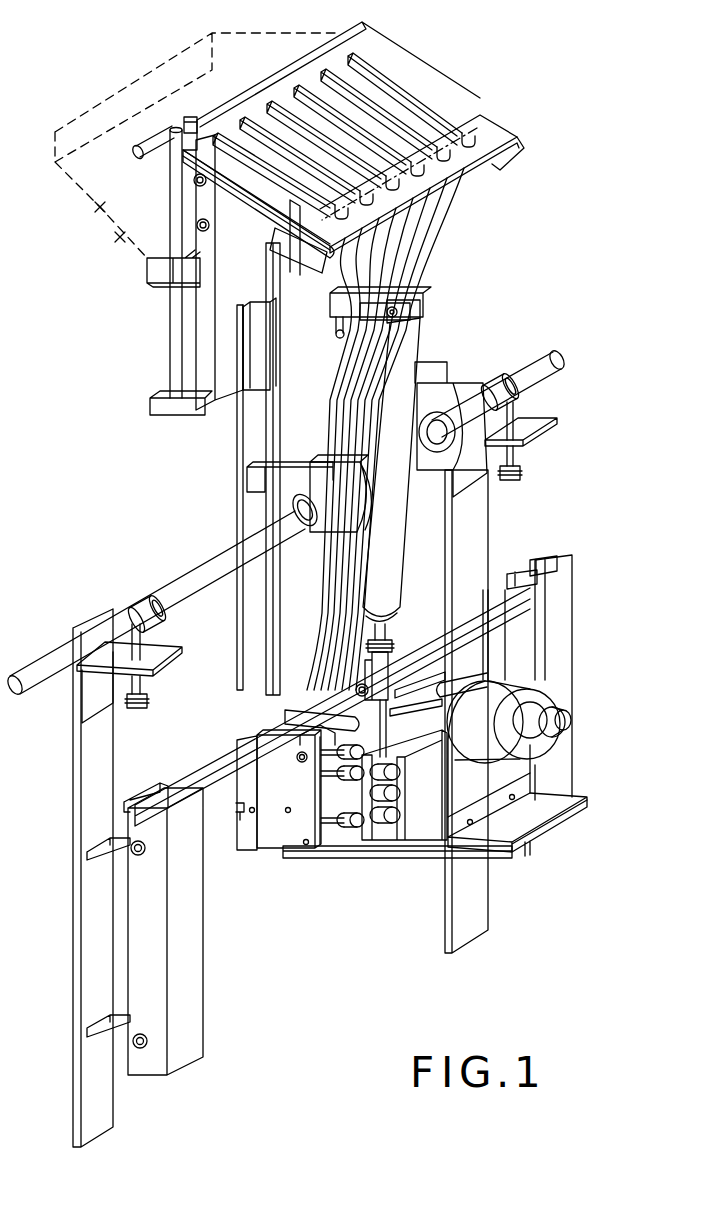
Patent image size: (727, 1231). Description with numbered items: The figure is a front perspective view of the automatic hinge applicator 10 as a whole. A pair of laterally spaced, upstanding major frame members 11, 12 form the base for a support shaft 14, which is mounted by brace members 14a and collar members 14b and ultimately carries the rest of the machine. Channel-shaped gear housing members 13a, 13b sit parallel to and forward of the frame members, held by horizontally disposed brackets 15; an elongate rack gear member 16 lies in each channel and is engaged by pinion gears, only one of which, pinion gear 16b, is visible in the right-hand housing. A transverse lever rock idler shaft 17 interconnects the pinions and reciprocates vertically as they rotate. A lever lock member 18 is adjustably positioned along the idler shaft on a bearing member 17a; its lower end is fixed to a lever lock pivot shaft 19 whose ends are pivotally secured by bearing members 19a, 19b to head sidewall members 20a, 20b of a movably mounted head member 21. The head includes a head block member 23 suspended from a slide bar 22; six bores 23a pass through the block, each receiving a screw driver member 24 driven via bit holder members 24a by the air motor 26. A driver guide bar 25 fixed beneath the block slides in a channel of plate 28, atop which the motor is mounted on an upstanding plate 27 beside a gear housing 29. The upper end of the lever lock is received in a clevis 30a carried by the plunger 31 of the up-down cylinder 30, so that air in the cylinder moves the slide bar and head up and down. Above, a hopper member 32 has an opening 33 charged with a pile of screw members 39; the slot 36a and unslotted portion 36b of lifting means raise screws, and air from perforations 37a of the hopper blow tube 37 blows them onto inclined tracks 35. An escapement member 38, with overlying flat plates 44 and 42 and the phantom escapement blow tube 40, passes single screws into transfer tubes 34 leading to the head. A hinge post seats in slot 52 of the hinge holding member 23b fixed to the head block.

The automatic hinge applicator 10 is at (575, 101).
The major frame member 11 is at (74, 781).
The major frame member 12 is at (478, 546).
The gear housing member 13a is at (190, 936).
The gear housing member 13b is at (580, 621).
The support shaft 14 is at (549, 358).
The brace member 14a is at (542, 432).
The collar member 14b is at (514, 373).
The bracket 15 is at (110, 843).
The rack gear member 16 is at (533, 572).
The pinion gear member 16b is at (525, 558).
The lever rock idler shaft 17 is at (230, 766).
The bearing member 17a is at (326, 696).
The lever lock member 18 is at (385, 673).
The lever lock pivot shaft 19 is at (387, 728).
The bearing member 19a is at (305, 762).
The bearing member 19b is at (399, 691).
The head sidewall member 20a is at (330, 858).
The head sidewall member 20b is at (403, 714).
The head member 21 is at (280, 856).
The slide bar 22 is at (275, 432).
The head block member 23 is at (263, 843).
The bore 23a is at (308, 737).
The hinge holding member 23b is at (248, 841).
The screw driver member 24 is at (335, 789).
The bit holder member 24a is at (362, 768).
The driver guide bar 25 is at (556, 836).
The air motor 26 is at (562, 692).
The upstanding plate 27 is at (448, 800).
The plate 28 is at (505, 832).
The gear housing 29 is at (415, 807).
The up-down cylinder 30 is at (396, 562).
The clevis 30a is at (390, 645).
The plunger 31 is at (387, 626).
The hopper member 32 is at (118, 238).
The opening 33 is at (150, 96).
The transfer tube 34 is at (350, 376).
The track 35 is at (395, 96).
The slot 36a is at (128, 140).
The unslotted portion 36b is at (186, 118).
The hopper blow tube 37 is at (188, 110).
The perforation 37a is at (305, 60).
The escapement member 38 is at (502, 130).
The screw members 39 is at (95, 207).
The escapement blow tube 40 is at (476, 120).
The flat plate 42 is at (273, 247).
The flat plate 44 is at (463, 165).
The slot 52 is at (238, 809).